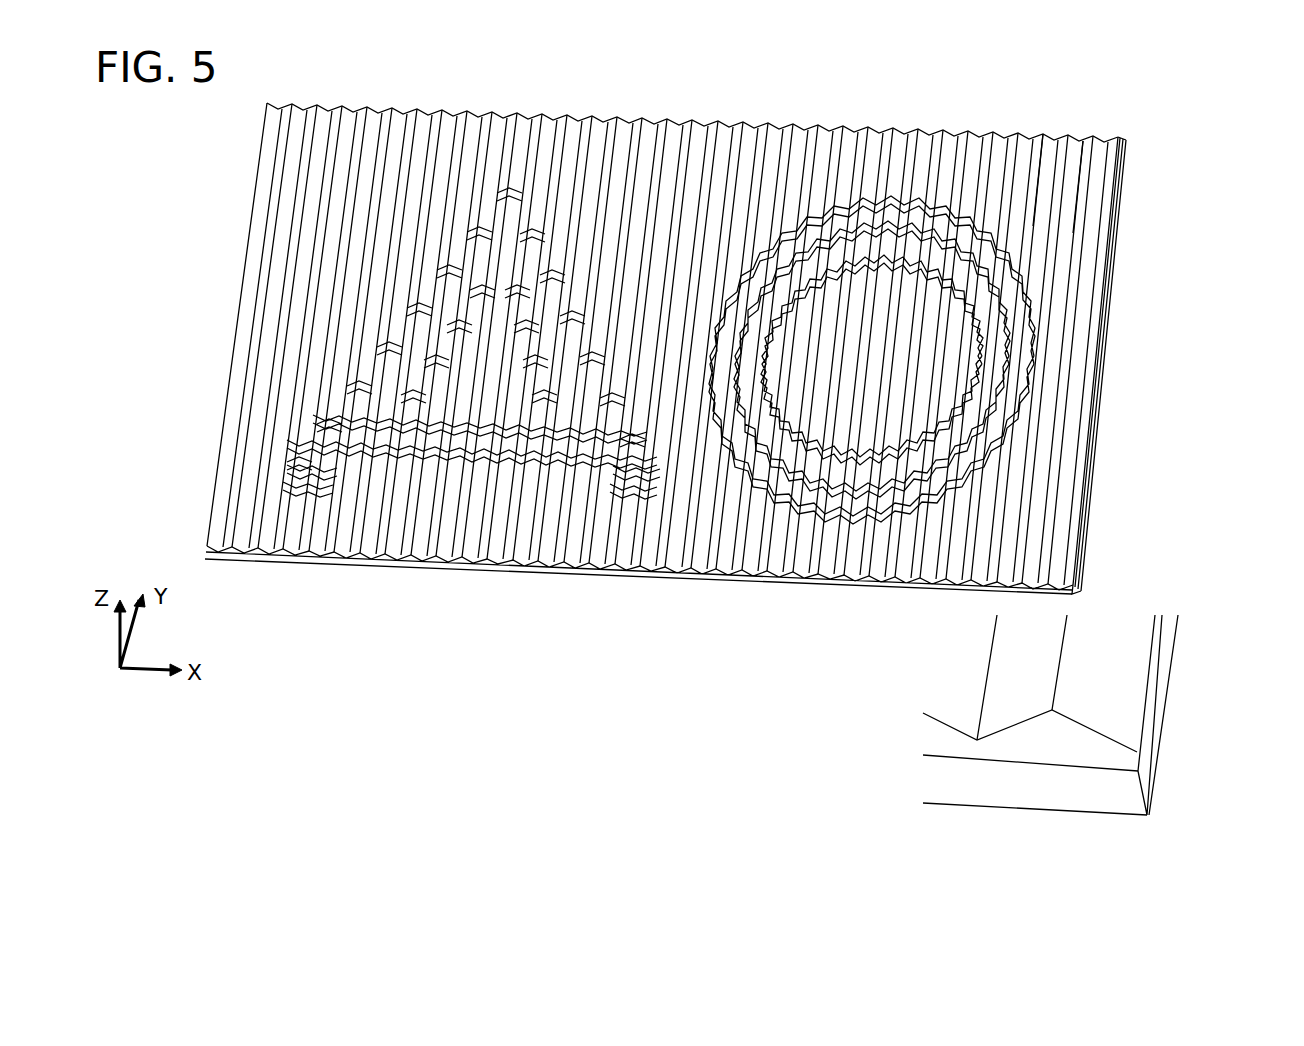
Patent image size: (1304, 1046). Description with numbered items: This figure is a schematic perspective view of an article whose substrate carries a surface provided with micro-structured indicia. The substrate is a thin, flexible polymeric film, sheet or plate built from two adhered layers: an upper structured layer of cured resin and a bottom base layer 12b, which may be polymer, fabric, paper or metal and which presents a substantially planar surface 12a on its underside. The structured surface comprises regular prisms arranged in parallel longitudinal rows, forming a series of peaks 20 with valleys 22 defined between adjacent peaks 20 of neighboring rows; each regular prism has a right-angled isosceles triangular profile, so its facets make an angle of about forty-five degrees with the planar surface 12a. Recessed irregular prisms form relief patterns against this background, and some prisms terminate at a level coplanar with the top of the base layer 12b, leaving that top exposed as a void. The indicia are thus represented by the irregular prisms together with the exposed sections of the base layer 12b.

The valleys 22 is at (1030, 188).
The peaks 20 is at (1065, 198).
The base layer 12b is at (1080, 766).
The planar surface 12a is at (1083, 821).